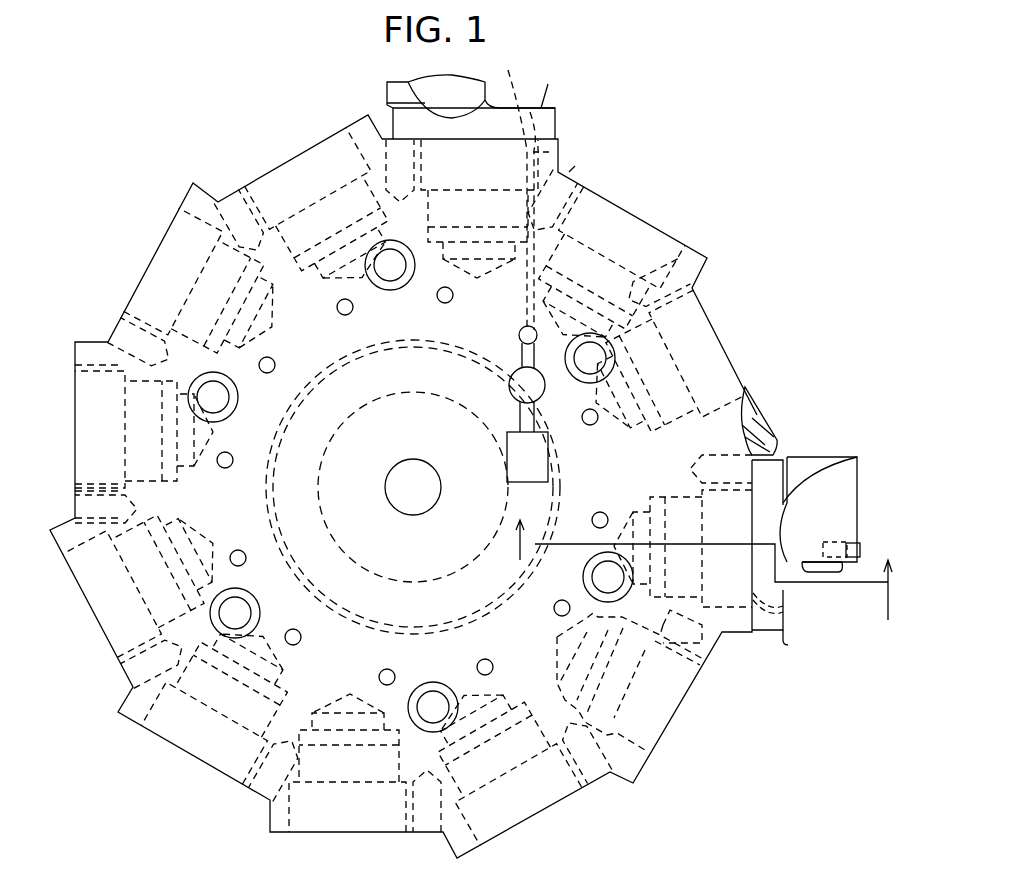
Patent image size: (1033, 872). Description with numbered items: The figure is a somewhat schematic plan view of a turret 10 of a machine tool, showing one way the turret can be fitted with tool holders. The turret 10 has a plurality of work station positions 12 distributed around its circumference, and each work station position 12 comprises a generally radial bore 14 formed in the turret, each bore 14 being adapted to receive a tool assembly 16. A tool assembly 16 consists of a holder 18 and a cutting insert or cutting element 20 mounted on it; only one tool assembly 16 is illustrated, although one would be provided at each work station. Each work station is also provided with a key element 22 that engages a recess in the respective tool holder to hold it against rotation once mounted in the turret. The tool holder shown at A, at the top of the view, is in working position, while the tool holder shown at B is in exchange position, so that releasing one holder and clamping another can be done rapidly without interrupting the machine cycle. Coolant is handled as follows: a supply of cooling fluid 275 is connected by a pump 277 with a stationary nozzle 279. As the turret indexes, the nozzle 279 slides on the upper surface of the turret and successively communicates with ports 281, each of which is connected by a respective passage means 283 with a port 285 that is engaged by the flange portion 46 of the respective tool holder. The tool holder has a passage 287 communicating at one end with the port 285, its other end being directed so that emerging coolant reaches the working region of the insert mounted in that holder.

The turret 10 is at (700, 252).
The work station position 12 is at (698, 313).
The radial bore 14 is at (760, 405).
The tool assembly 16 is at (850, 456).
The holder 18 is at (813, 465).
The cutting insert 20 is at (860, 549).
The key element 22 is at (771, 457).
The flange portion 46 is at (552, 118).
The supply of cooling fluid 275 is at (506, 455).
The pump 277 is at (509, 387).
The stationary nozzle 279 is at (518, 333).
The port 281 is at (441, 303).
The passage means 283 is at (595, 160).
The port 285 is at (548, 150).
The passage 287 is at (509, 189).
The working position A is at (547, 86).
The exchange position B is at (791, 643).